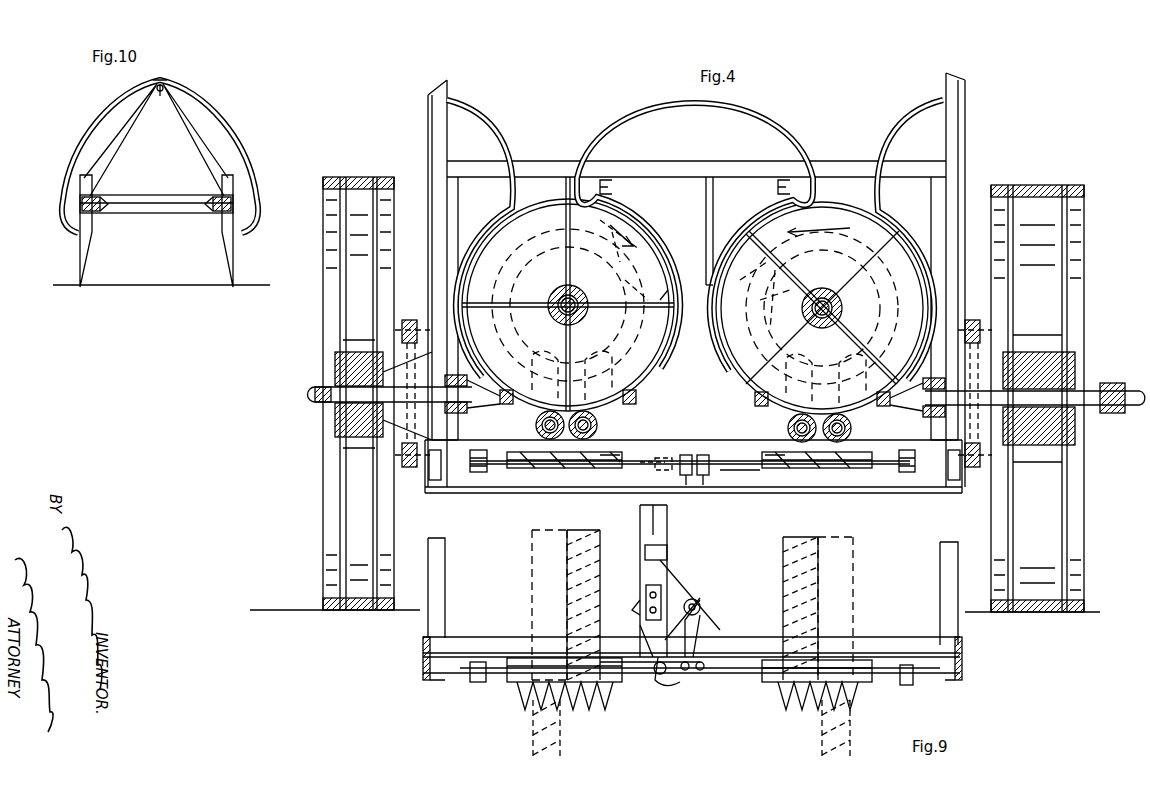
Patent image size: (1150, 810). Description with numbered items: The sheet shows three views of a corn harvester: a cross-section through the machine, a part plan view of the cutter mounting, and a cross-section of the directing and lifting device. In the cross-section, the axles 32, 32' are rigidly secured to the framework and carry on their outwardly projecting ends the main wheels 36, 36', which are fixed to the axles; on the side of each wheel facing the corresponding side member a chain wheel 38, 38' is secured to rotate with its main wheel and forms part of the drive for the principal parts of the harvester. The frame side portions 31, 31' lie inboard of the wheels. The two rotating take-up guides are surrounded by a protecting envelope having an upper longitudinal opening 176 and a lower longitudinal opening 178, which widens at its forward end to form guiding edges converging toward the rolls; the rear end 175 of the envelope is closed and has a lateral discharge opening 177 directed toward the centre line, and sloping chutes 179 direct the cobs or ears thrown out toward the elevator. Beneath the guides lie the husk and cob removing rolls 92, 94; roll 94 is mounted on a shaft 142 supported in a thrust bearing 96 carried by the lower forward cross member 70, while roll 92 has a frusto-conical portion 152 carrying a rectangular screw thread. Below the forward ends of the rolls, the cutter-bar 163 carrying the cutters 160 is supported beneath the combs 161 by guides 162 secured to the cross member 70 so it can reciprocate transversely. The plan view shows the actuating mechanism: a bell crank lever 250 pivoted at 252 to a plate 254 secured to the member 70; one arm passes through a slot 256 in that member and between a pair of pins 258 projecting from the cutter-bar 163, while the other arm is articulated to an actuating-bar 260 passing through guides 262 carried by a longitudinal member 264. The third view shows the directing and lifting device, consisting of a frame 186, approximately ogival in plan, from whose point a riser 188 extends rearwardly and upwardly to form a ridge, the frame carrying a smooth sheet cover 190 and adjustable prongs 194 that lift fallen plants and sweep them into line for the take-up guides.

In FIG. 4, the frame side member 31 is at (935, 431).
In FIG. 4, the frame side member 31' is at (450, 431).
In FIG. 4, the axle 32 is at (1034, 390).
In FIG. 4, the axle 32' is at (372, 408).
In FIG. 4, the main wheel 36 is at (1053, 398).
In FIG. 4, the main wheel 36' is at (356, 393).
In FIG. 4, the chain wheel 38 is at (975, 372).
In FIG. 4, the chain wheel 38' is at (412, 373).
In FIG. 4, the lower forward cross member 70 is at (740, 478).
In FIG. 9, the lower forward cross member 70 is at (710, 672).
In FIG. 4, the roll 92 is at (600, 428).
In FIG. 9, the roll 92 is at (533, 552).
In FIG. 4, the roll 94 is at (852, 428).
In FIG. 4, the thrust bearing 96 is at (533, 420).
In FIG. 9, the thrust bearing 96 is at (530, 583).
In FIG. 4, the shaft 142 is at (520, 410).
In FIG. 4, the frusto-conical portion 152 is at (636, 404).
In FIG. 4, the cutter 160 is at (548, 470).
In FIG. 9, the cutter 160 is at (600, 688).
In FIG. 4, the comb 161 is at (612, 458).
In FIG. 9, the comb 161 is at (518, 690).
In FIG. 4, the guide 162 is at (478, 474).
In FIG. 9, the guide 162 is at (694, 593).
In FIG. 4, the cutter-bar 163 is at (732, 458).
In FIG. 9, the cutter-bar 163 is at (720, 680).
In FIG. 4, the rear end of the envelope 175 is at (610, 206).
In FIG. 4, the upper longitudinal opening 176 is at (552, 185).
In FIG. 4, the lateral discharge opening 177 is at (640, 235).
In FIG. 4, the lower longitudinal opening 178 is at (728, 372).
In FIG. 4, the sloping chute 179 is at (670, 318).
In FIG. 10, the frame 186 is at (78, 203).
In FIG. 10, the riser 188 is at (159, 96).
In FIG. 10, the cover 190 is at (82, 142).
In FIG. 10, the prong 194 is at (88, 250).
In FIG. 4, the bell crank lever 250 is at (694, 478).
In FIG. 9, the bell crank lever 250 is at (702, 610).
In FIG. 9, the pivot 252 is at (700, 597).
In FIG. 9, the plate 254 is at (680, 590).
In FIG. 4, the slot 256 is at (706, 453).
In FIG. 4, the pin 258 is at (684, 453).
In FIG. 9, the pin 258 is at (670, 682).
In FIG. 9, the actuating-bar 260 is at (645, 572).
In FIG. 9, the guide 262 is at (662, 553).
In FIG. 9, the longitudinal member 264 is at (645, 545).